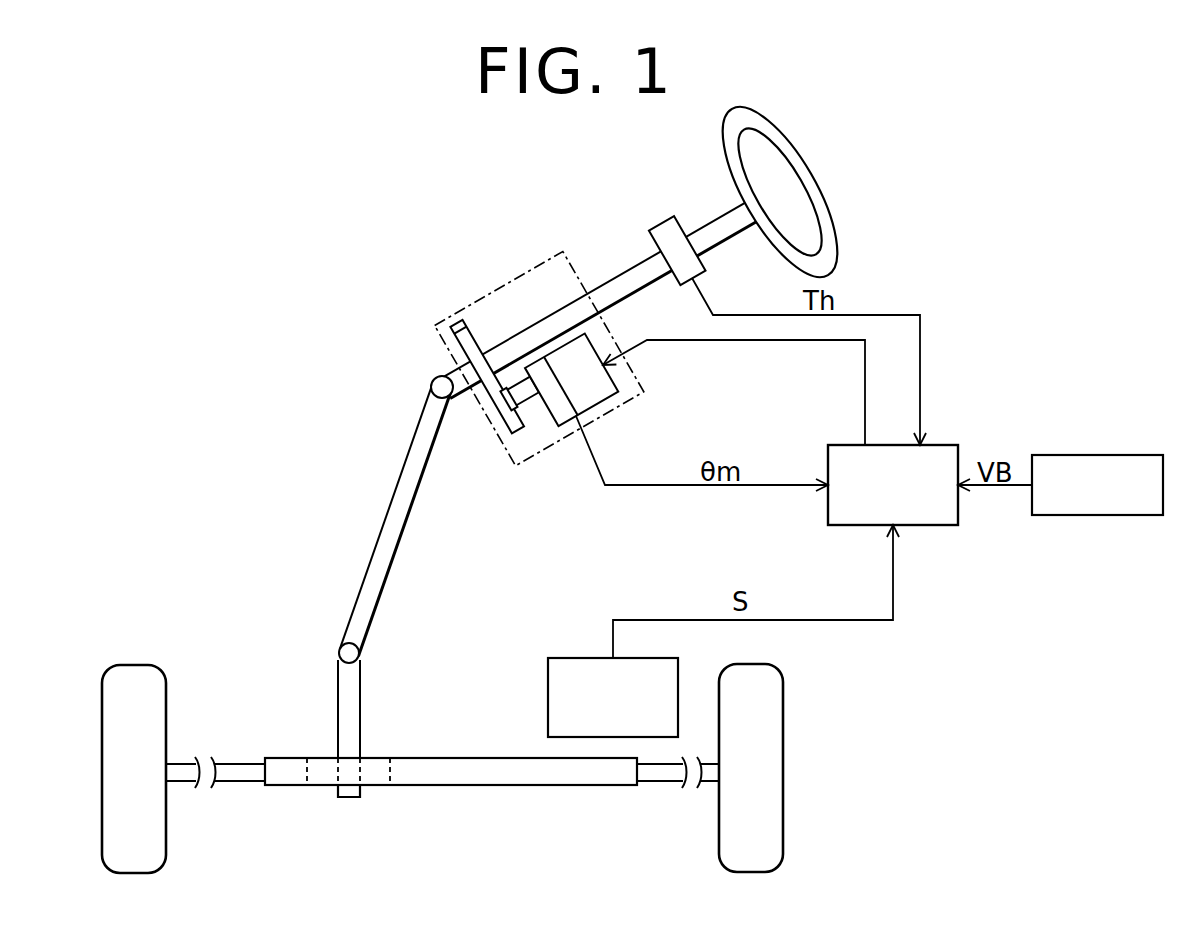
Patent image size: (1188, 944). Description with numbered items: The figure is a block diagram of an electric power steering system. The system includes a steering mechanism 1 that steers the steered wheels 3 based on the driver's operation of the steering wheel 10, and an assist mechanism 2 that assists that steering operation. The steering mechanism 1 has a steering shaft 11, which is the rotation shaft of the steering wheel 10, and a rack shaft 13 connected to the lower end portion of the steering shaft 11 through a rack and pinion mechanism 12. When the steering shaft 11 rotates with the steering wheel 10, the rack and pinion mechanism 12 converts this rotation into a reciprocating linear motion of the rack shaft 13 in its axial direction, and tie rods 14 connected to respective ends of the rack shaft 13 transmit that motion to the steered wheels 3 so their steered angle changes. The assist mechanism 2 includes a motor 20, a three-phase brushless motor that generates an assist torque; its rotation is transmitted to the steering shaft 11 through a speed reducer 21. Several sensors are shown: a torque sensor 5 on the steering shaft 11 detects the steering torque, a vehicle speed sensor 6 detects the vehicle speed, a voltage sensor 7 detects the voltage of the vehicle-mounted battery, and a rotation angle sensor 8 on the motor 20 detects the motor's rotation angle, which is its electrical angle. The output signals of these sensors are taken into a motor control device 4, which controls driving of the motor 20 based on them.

The steering mechanism 1 is at (320, 438).
The assist mechanism 2 is at (516, 277).
The steered wheels 3 is at (102, 770).
The motor control device 4 is at (919, 528).
The torque sensor 5 is at (665, 218).
The vehicle speed sensor 6 is at (567, 653).
The voltage sensor 7 is at (1098, 455).
The rotation angle sensor 8 is at (547, 423).
The steering wheel 10 is at (812, 185).
The steering shaft 11 is at (403, 468).
The rack and pinion mechanism 12 is at (394, 761).
The rack shaft 13 is at (473, 757).
The tie rods 14 is at (238, 782).
The motor 20 is at (615, 375).
The speed reducer 21 is at (482, 405).